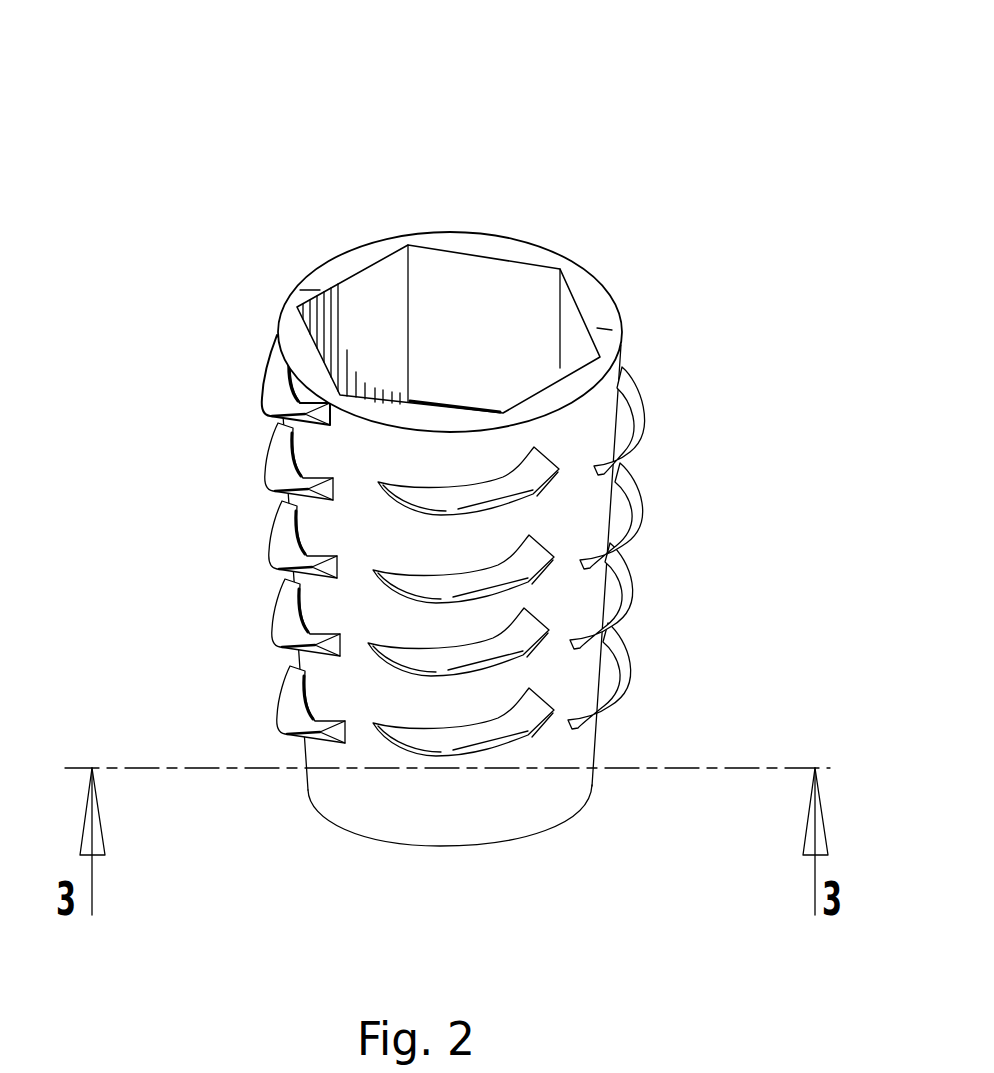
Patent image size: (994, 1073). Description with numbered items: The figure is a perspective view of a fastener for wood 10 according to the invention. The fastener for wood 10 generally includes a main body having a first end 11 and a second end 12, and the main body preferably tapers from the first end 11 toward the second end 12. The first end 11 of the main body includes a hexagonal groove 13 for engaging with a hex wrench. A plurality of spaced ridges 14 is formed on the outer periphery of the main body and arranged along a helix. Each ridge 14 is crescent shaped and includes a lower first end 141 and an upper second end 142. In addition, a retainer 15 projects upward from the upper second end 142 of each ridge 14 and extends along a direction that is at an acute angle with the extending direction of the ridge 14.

The fastener for wood 10 is at (456, 484).
The first end 11 is at (481, 484).
The second end 12 is at (548, 803).
The hexagonal groove 13 is at (498, 303).
The ridge 14 is at (454, 705).
The lower first end 141 is at (398, 730).
The upper second end 142 is at (507, 728).
The retainer 15 is at (538, 696).